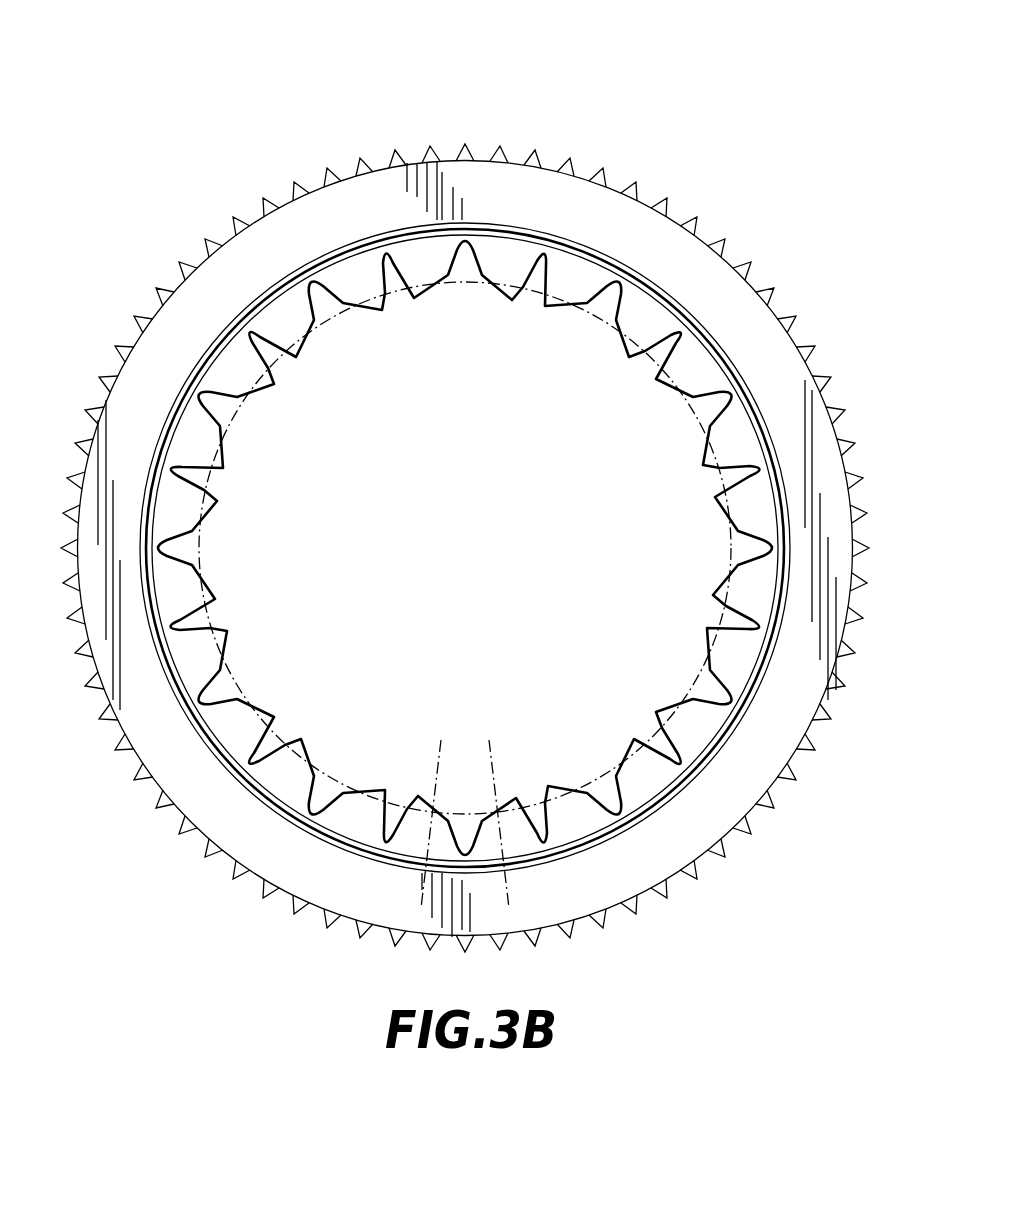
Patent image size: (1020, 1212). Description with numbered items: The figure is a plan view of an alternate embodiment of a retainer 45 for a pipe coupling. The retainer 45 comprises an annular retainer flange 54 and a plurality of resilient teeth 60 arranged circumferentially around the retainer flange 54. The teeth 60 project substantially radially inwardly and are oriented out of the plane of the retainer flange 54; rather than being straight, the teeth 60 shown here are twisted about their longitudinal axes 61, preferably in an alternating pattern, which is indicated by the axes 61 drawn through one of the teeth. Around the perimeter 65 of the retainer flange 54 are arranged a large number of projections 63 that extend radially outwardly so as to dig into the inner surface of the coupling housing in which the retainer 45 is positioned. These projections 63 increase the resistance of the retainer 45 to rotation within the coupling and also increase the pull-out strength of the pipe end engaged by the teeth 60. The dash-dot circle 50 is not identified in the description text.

The retainer 45 is at (627, 138).
The retainer flange 54 is at (587, 202).
The projections 63 is at (260, 200).
The perimeter 65 is at (175, 283).
The resilient teeth 60 is at (305, 753).
The reference circle 50 is at (240, 420).
The longitudinal axes 61 is at (492, 755).